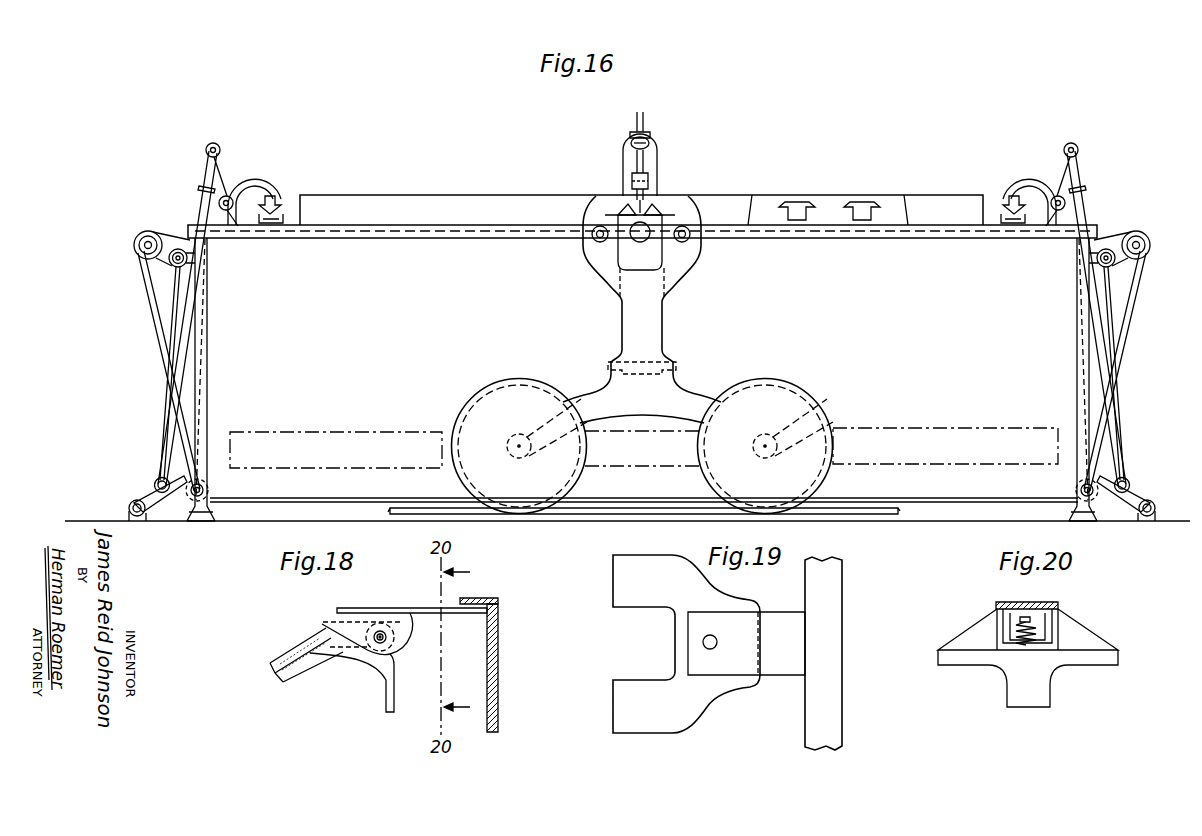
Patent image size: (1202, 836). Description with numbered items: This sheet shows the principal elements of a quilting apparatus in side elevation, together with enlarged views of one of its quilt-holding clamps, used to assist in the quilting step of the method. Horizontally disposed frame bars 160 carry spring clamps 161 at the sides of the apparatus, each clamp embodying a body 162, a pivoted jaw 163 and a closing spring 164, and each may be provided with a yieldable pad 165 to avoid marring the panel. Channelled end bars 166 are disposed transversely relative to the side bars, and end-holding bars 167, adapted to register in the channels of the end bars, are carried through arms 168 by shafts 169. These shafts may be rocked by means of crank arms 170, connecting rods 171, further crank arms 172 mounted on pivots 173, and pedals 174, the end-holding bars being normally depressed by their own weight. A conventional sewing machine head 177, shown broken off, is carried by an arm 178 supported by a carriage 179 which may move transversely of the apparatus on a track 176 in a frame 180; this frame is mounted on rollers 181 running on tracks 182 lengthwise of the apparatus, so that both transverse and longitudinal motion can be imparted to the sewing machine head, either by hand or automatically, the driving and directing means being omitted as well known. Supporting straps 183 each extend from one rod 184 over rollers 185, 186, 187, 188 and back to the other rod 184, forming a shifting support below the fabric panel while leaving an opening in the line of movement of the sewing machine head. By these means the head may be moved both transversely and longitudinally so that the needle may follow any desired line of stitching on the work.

In FIG. 16, the frame bar 160 is at (449, 195).
In FIG. 18, the frame bar 160 is at (499, 612).
In FIG. 19, the frame bar 160 is at (838, 668).
In FIG. 16, the spring clamp 161 is at (861, 202).
In FIG. 18, the spring clamp 161 is at (352, 608).
In FIG. 20, the spring clamp 161 is at (1088, 634).
In FIG. 18, the body 162 is at (350, 637).
In FIG. 20, the body 162 is at (1056, 617).
In FIG. 18, the pivoted jaw 163 is at (340, 659).
In FIG. 19, the pivoted jaw 163 is at (686, 644).
In FIG. 20, the pivoted jaw 163 is at (1103, 666).
In FIG. 18, the closing spring 164 is at (387, 644).
In FIG. 20, the closing spring 164 is at (1026, 646).
In FIG. 18, the yieldable pad 165 is at (290, 653).
In FIG. 16, the channelled end bar 166 is at (276, 226).
In FIG. 16, the end-holding bar 167 is at (284, 208).
In FIG. 16, the arm 168 is at (256, 180).
In FIG. 16, the shaft 169 is at (229, 211).
In FIG. 16, the crank arm 170 is at (220, 170).
In FIG. 16, the connecting rod 171 is at (188, 336).
In FIG. 16, the crank arm 172 is at (158, 480).
In FIG. 16, the pivot 173 is at (129, 508).
In FIG. 16, the pedal 174 is at (167, 505).
In FIG. 16, the track 176 is at (641, 369).
In FIG. 16, the sewing machine head 177 is at (657, 148).
In FIG. 16, the arm 178 is at (650, 179).
In FIG. 16, the carriage 179 is at (676, 217).
In FIG. 16, the frame 180 is at (642, 309).
In FIG. 16, the roller 181 is at (643, 446).
In FIG. 16, the track 182 is at (868, 515).
In FIG. 16, the supporting strap 183 is at (476, 238).
In FIG. 16, the rod 184 is at (594, 241).
In FIG. 16, the roller 185 is at (134, 252).
In FIG. 16, the roller 186 is at (207, 490).
In FIG. 16, the roller 187 is at (1078, 486).
In FIG. 16, the roller 188 is at (1147, 254).